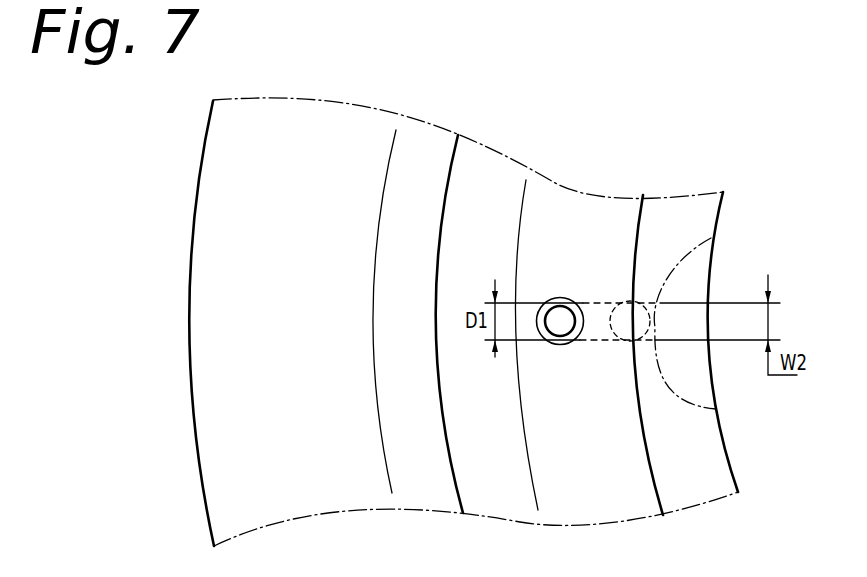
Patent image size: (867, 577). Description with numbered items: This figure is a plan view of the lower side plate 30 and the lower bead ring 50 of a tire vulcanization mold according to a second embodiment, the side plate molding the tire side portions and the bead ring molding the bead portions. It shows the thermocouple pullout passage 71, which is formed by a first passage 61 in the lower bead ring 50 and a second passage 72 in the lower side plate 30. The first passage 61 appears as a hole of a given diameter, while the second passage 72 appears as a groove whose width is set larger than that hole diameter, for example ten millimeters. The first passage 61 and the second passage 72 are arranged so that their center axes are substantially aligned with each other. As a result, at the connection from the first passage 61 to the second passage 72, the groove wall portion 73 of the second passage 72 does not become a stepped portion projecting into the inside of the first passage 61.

The lower side plate 30 is at (340, 127).
The lower bead ring 50 is at (500, 175).
The first passage 61 is at (595, 313).
The thermocouple pullout passage 71 is at (594, 269).
The second passage 72 is at (650, 302).
The groove wall portion 73 is at (656, 341).